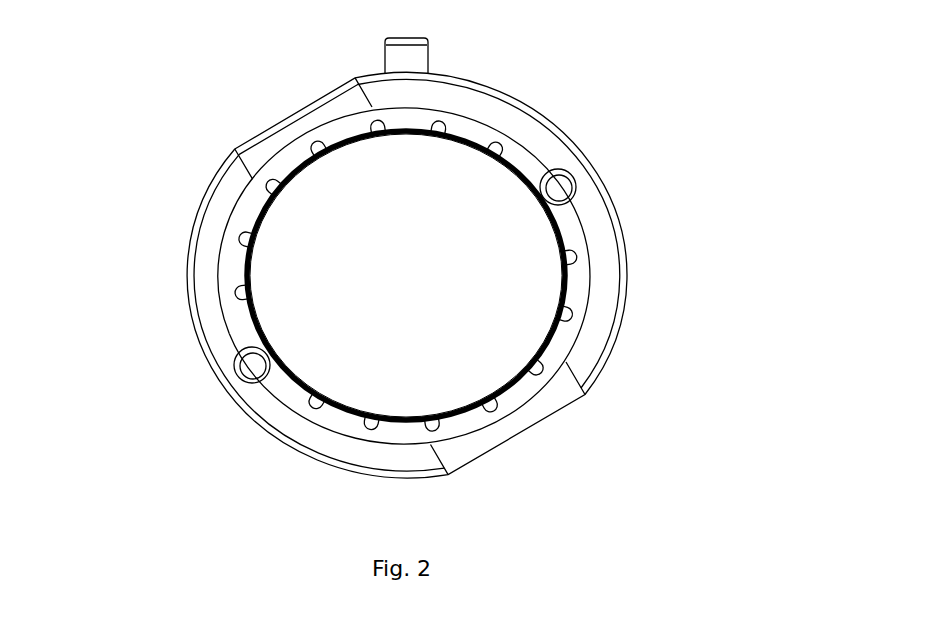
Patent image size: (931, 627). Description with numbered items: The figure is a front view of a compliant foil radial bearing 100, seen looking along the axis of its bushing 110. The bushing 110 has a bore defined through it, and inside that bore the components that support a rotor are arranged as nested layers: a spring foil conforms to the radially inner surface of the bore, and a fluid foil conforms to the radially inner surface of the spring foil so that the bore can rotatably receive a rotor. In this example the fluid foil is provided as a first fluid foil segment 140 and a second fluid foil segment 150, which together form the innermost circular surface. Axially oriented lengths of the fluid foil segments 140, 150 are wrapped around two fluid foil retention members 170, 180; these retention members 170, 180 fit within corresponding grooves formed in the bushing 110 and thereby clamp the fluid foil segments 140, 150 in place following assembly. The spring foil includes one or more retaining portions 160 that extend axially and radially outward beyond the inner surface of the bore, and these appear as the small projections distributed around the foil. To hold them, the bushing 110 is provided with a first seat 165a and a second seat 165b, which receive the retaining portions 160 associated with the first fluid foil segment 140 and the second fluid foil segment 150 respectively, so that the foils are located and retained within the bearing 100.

The compliant foil radial bearing 100 is at (206, 90).
The bushing 110 is at (186, 208).
The first fluid foil segment 140 is at (370, 398).
The second fluid foil segment 150 is at (367, 147).
The retaining portions 160 is at (537, 375).
The first seat 165a is at (213, 266).
The second seat 165b is at (292, 414).
The fluid foil retention member 170 is at (565, 165).
The fluid foil retention member 180 is at (222, 362).